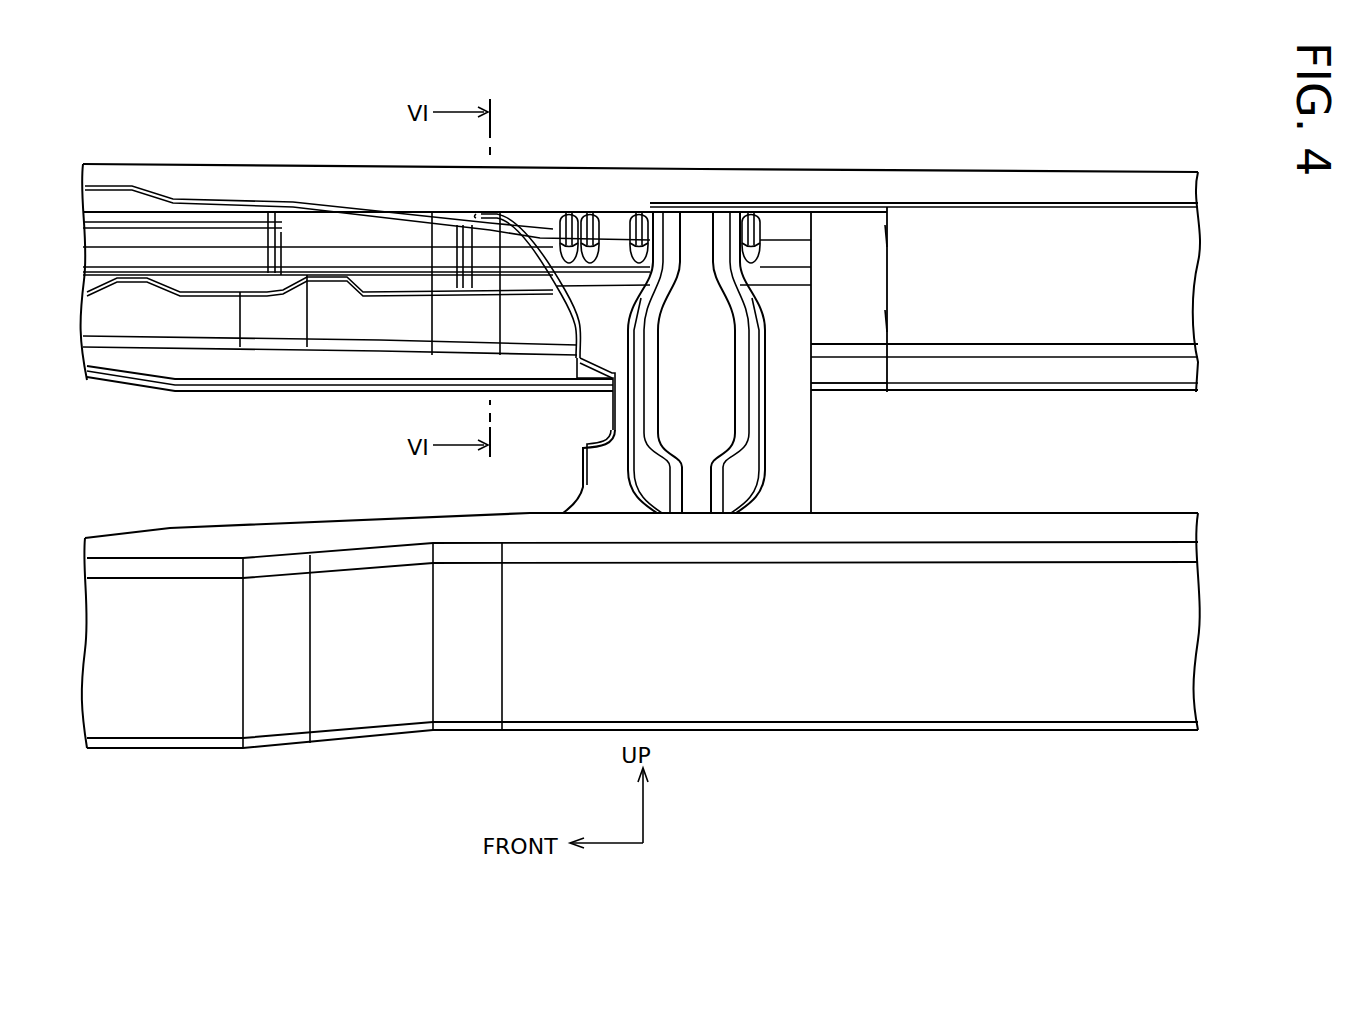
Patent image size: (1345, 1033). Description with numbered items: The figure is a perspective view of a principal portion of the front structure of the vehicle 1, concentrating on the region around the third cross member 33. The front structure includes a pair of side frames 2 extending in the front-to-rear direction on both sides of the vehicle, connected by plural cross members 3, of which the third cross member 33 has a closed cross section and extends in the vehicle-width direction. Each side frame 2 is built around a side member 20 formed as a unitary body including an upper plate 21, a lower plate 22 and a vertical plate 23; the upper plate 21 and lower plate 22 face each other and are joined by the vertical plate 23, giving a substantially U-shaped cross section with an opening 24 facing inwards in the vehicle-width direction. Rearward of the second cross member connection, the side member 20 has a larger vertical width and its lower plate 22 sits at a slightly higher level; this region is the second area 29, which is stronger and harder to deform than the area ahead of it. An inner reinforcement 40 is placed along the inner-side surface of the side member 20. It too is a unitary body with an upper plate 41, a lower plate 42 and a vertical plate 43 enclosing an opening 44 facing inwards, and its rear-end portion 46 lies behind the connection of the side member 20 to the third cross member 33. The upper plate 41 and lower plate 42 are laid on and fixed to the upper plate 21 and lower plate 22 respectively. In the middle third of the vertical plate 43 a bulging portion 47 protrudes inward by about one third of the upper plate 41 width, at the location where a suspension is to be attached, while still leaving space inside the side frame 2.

The vehicle 1 is at (579, 156).
The side frame 2 is at (1128, 172).
The cross member 3 is at (619, 362).
The third cross member 33 is at (598, 487).
The side member 20 is at (750, 178).
The upper plate 21 is at (700, 182).
The lower plate 22 is at (985, 372).
The vertical plate 23 is at (1040, 300).
The opening 24 is at (1041, 200).
The second area 29 is at (270, 170).
The inner reinforcement 40 is at (899, 307).
The upper plate 41 is at (852, 208).
The lower plate 42 is at (865, 378).
The vertical plate 43 is at (888, 320).
The opening 44 is at (879, 208).
The rear-end portion 46 is at (888, 236).
The bulging portion 47 is at (363, 260).